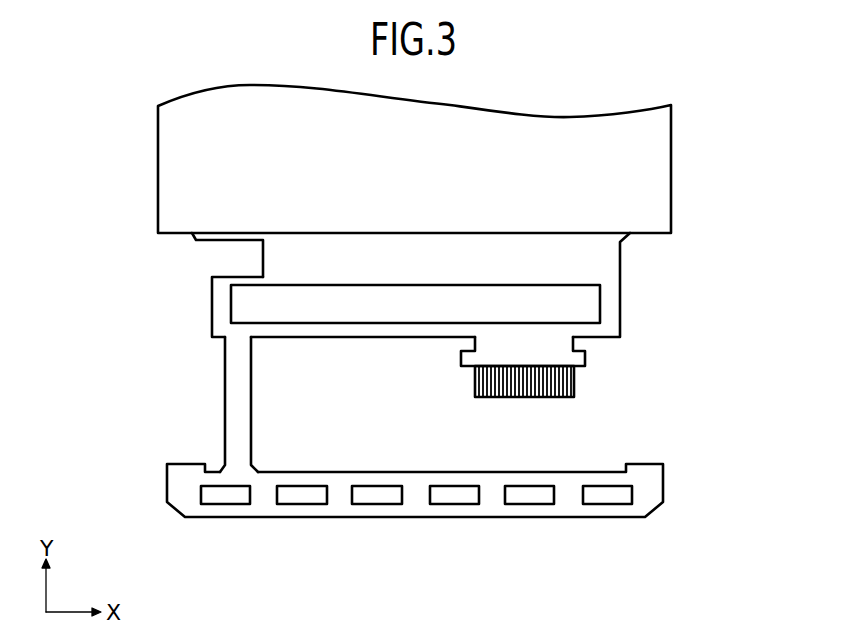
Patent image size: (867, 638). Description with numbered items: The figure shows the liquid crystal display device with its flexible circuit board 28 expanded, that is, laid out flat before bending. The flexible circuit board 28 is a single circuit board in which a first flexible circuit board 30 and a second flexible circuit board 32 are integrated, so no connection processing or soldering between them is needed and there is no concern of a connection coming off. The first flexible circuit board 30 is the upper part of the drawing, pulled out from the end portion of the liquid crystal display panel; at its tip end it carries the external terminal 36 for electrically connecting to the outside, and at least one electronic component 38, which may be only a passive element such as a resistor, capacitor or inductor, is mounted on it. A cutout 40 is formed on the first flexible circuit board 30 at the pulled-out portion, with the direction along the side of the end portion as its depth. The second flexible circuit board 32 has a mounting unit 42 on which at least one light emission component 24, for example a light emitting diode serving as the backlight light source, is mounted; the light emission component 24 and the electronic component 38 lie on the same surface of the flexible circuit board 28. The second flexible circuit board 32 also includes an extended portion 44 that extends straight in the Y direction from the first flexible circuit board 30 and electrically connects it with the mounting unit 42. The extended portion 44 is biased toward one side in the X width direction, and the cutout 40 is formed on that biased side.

The light emission component 24 is at (223, 497).
The flexible circuit board 28 is at (57, 293).
The first flexible circuit board 30 is at (218, 308).
The second flexible circuit board 32 is at (110, 397).
The external terminal 36 is at (576, 382).
The electronic component 38 is at (601, 304).
The cutout 40 is at (238, 262).
The mounting unit 42 is at (178, 488).
The extended portion 44 is at (233, 412).